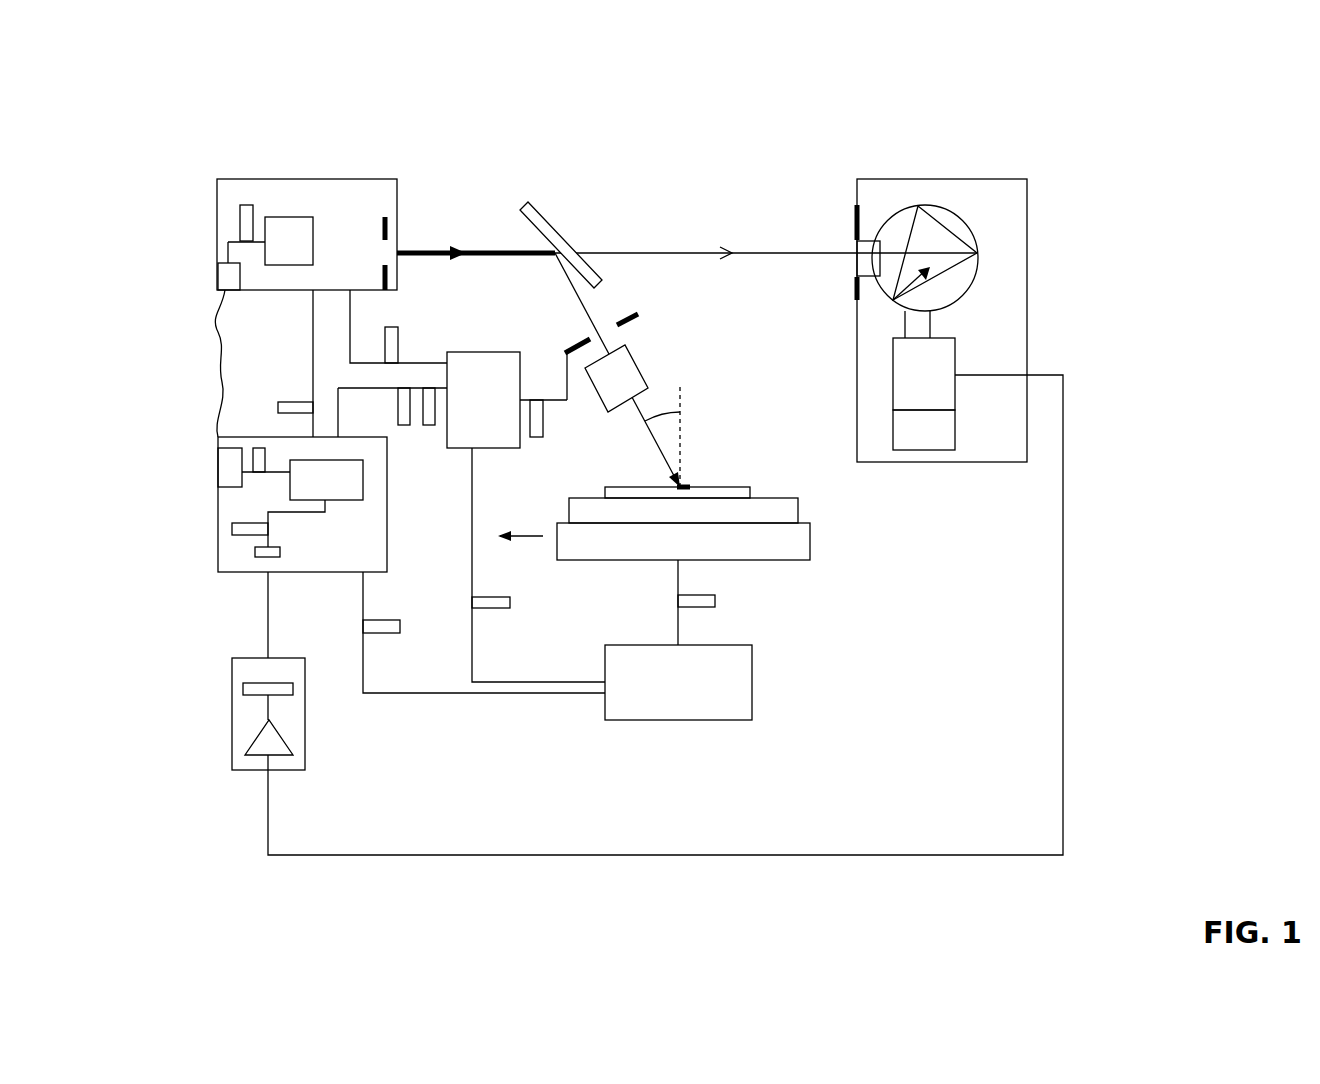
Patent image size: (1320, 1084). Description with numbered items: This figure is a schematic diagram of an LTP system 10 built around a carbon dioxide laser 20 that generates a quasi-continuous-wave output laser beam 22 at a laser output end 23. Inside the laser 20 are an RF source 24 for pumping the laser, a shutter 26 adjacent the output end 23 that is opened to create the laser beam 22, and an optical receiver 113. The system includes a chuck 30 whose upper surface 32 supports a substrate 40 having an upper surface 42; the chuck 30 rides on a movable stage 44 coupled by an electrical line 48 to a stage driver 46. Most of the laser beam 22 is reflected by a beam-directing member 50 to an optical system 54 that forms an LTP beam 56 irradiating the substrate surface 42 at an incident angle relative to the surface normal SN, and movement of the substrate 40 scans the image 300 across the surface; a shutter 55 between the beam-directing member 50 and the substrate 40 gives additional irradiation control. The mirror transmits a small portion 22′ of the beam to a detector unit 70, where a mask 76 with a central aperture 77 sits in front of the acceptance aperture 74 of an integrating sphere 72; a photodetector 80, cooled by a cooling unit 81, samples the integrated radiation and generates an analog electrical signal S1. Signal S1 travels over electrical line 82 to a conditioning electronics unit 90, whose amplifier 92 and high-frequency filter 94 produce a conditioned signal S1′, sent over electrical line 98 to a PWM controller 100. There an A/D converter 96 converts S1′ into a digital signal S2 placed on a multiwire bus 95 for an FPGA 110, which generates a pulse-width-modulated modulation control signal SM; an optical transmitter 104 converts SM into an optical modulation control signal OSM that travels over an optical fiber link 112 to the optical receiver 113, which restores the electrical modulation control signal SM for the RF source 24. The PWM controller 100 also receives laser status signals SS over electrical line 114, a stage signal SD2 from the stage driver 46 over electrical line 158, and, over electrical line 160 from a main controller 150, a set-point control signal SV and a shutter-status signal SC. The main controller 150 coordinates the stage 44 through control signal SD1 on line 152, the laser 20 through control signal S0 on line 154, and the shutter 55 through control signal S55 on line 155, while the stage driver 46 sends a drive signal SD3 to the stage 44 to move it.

The LTP system 10 is at (1145, 120).
The CO2 laser 20 is at (262, 179).
The RF source 24 is at (289, 241).
The optical receiver 113 is at (230, 277).
The shutter 26 is at (385, 215).
The laser output end 23 is at (398, 225).
The output laser beam 22 is at (433, 250).
The laser beam portion 22′ is at (648, 253).
The beam-directing member 50 is at (528, 203).
The shutter 55 is at (628, 312).
The line 155 is at (567, 372).
The optical system 54 is at (616, 378).
The LTP beam 56 is at (653, 437).
The substrate surface normal SN is at (680, 437).
The image 300 is at (690, 486).
The substrate upper surface 42 is at (740, 487).
The substrate 40 is at (752, 493).
The chuck 30 is at (800, 511).
The movable stage 44 is at (810, 534).
The chuck upper surface 32 is at (572, 497).
The electrical line 48 is at (677, 583).
The drive signal SD3 is at (715, 607).
The stage driver 46 is at (678, 682).
The main controller 150 is at (483, 400).
The line 154 is at (350, 318).
The control signal S0 is at (398, 337).
The control signal S55 is at (545, 421).
The electrical line 160 is at (350, 388).
The signal SC is at (402, 425).
The control signal SV is at (427, 425).
The line 152 is at (470, 547).
The stage driver control signal SD1 is at (497, 608).
The electrical line 158 is at (436, 696).
The stage signal SD2 is at (400, 633).
The electrical line 114 is at (313, 318).
The optical modulation control signal OSM is at (222, 323).
The optical fiber link 112 is at (217, 412).
The status signals SS is at (291, 400).
The modulation control signal SM is at (240, 215).
The pulse-width modulation controller 100 is at (218, 497).
The optical transmitter 104 is at (230, 463).
The field-programmable gate array 110 is at (302, 480).
The multiwire bus 95 is at (282, 514).
The conditioned digital signal S2 is at (232, 528).
The analog-to-digital converter 96 is at (255, 558).
The electrical line 98 is at (268, 583).
The conditioned signal S1′ is at (270, 648).
The conditioning electronics unit 90 is at (305, 683).
The high-frequency filter 94 is at (243, 684).
The amplifier 92 is at (255, 733).
The analog electrical signal S1 is at (276, 826).
The electrical line 82 is at (1063, 428).
The detector unit 70 is at (942, 320).
The mask 76 is at (852, 218).
The central aperture 77 is at (840, 237).
The acceptance aperture 74 is at (860, 253).
The integrating sphere 72 is at (925, 206).
The photodetector 80 is at (924, 374).
The cooling unit 81 is at (924, 430).